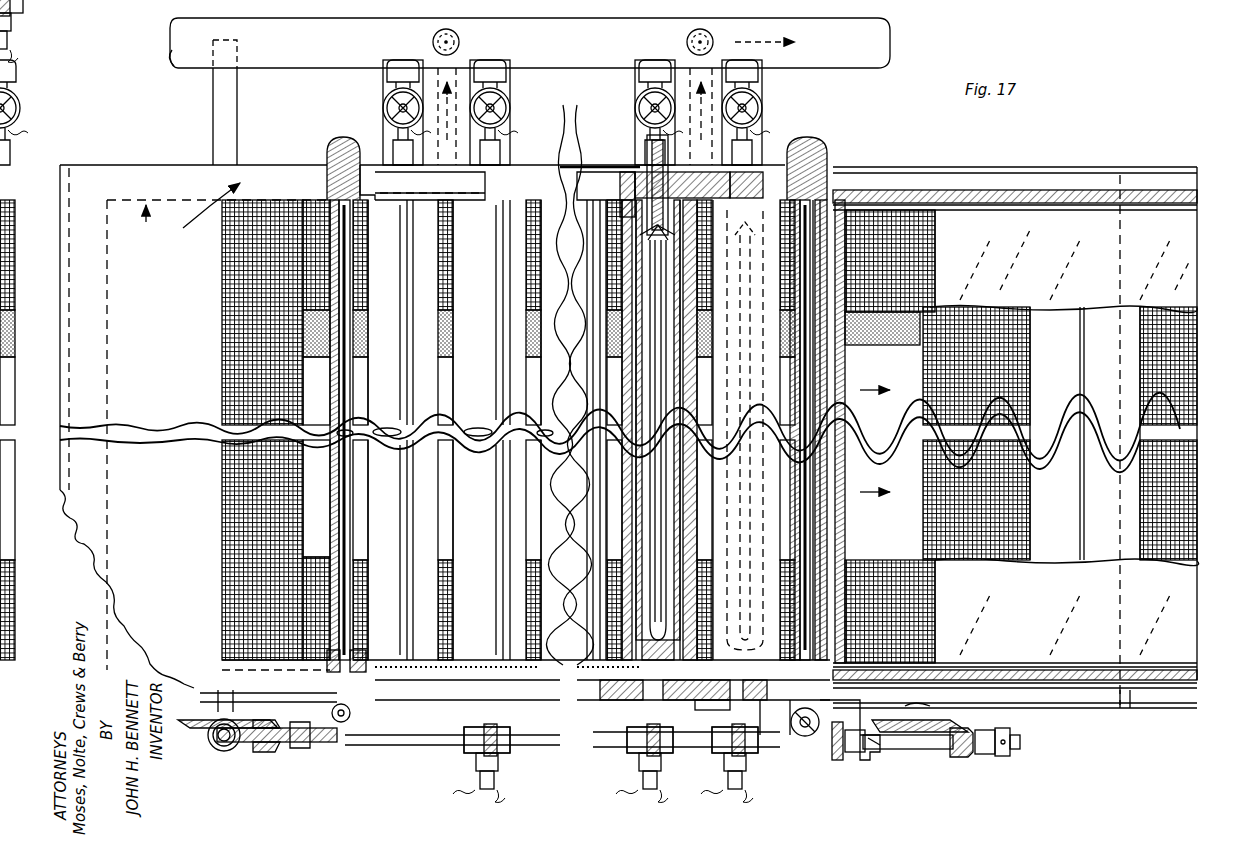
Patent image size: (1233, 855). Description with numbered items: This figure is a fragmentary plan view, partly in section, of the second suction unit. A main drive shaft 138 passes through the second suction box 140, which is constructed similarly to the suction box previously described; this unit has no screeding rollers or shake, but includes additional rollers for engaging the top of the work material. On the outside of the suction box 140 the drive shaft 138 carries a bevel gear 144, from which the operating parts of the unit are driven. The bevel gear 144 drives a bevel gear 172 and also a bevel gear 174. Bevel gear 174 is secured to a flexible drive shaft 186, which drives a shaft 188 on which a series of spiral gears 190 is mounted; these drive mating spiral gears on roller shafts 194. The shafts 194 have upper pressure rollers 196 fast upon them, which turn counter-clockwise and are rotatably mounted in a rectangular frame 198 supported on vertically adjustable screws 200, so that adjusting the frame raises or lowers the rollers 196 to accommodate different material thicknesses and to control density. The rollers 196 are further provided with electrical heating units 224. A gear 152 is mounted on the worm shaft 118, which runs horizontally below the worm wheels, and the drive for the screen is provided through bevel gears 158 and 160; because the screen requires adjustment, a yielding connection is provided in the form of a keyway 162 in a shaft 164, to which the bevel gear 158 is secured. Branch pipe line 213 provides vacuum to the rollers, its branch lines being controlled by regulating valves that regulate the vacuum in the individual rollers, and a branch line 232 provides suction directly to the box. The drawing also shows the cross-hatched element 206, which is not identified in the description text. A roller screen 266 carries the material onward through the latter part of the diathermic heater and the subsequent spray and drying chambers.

The branch pipe line 213 is at (168, 40).
The main drive shaft 138 is at (213, 115).
The screen 206 is at (262, 215).
The vertically adjustable screw 200 is at (362, 112).
The branch line 232 is at (462, 75).
The upper pressure roller 196 is at (688, 298).
The rectangular frame 198 is at (597, 180).
The second suction box 140 is at (193, 213).
The bevel gear 144 is at (205, 723).
The bevel gear 174 is at (226, 751).
The bevel gear 172 is at (264, 748).
The flexible drive shaft 186 is at (292, 748).
The shaft 188 is at (424, 746).
The spiral gear 190 is at (647, 765).
The electrical heating unit 224 is at (662, 405).
The roller screen 266 is at (1137, 490).
The bevel gear 160 is at (878, 720).
The keyway 162 is at (870, 752).
The shaft 164 is at (943, 750).
The bevel gear 158 is at (962, 750).
The gear 152 is at (838, 760).
The worm shaft 118 is at (776, 748).
The roller shaft 194 is at (703, 700).